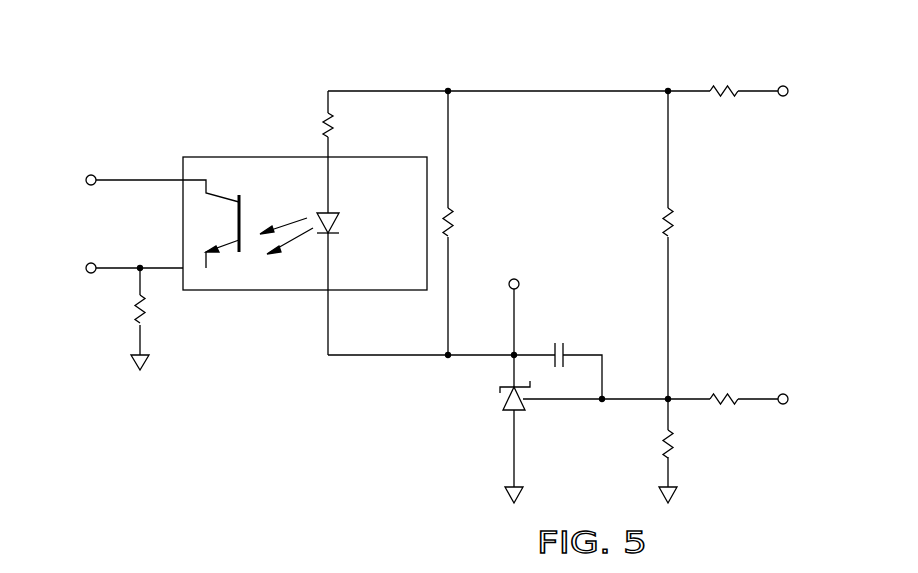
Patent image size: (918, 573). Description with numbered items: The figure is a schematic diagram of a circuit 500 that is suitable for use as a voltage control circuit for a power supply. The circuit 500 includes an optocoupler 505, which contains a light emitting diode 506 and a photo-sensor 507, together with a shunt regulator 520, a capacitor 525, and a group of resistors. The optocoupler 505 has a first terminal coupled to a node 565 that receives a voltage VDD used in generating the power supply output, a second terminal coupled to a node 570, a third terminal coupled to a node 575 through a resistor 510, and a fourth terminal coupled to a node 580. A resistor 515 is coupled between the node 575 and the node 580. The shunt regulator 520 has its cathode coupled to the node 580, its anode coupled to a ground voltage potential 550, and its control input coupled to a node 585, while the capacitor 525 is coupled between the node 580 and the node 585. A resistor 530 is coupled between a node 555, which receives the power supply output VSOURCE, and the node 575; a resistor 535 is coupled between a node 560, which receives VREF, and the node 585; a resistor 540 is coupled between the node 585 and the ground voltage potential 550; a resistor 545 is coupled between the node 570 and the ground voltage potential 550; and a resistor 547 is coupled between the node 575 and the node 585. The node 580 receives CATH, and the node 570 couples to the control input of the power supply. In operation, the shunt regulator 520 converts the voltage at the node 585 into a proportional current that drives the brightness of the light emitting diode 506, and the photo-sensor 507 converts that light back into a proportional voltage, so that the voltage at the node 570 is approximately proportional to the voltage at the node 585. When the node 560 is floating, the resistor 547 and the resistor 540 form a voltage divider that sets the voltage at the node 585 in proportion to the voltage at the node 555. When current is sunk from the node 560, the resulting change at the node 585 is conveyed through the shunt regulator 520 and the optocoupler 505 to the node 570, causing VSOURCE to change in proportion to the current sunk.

The circuit 500 is at (134, 70).
The optocoupler 505 is at (214, 155).
The light emitting diode 506 is at (340, 229).
The photo-sensor 507 is at (245, 211).
The resistor 510 is at (325, 122).
The resistor 515 is at (455, 221).
The shunt regulator 520 is at (496, 392).
The capacitor 525 is at (560, 341).
The resistor 530 is at (727, 87).
The resistor 535 is at (728, 396).
The resistor 540 is at (673, 445).
The resistor 545 is at (137, 312).
The resistor 547 is at (673, 223).
The ground voltage potential 550 is at (135, 364).
The node 555 is at (786, 85).
The node 560 is at (784, 406).
The node 565 is at (90, 175).
The node 570 is at (90, 263).
The node 575 is at (446, 88).
The node 580 is at (511, 352).
The node 585 is at (666, 397).